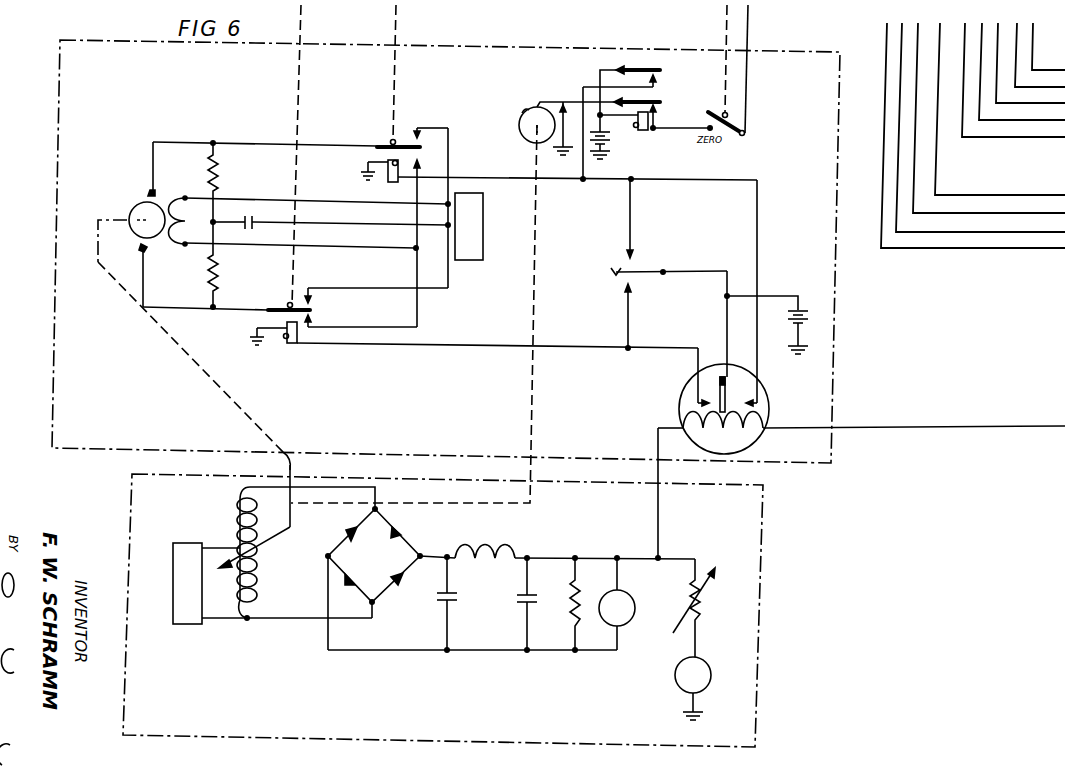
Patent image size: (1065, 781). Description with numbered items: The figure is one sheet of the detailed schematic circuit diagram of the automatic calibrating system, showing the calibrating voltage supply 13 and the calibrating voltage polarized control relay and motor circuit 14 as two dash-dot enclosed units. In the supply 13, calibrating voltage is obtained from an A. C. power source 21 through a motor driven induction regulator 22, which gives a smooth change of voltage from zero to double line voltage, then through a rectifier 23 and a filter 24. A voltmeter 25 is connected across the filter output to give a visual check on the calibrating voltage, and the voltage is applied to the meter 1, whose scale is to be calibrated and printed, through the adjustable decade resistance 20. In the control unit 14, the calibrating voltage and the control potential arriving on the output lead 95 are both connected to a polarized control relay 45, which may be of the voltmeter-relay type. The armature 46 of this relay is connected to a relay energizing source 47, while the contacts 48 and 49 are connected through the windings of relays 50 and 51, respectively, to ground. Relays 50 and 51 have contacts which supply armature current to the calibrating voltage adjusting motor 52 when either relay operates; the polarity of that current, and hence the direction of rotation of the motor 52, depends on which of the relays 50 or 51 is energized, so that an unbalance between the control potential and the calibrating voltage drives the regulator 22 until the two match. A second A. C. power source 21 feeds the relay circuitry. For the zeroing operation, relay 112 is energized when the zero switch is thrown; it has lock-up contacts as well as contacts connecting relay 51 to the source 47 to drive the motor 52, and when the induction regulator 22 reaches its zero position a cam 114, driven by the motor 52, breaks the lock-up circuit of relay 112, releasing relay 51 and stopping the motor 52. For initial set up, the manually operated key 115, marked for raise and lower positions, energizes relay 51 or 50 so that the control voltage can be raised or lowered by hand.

The meter 1 is at (711, 672).
The calibrating voltage supply 13 is at (757, 678).
The calibrating voltage polarized control relay and motor circuit 14 is at (52, 352).
The adjustable decade resistance 20 is at (702, 602).
The A. C. power source 21 is at (483, 206).
The motor driven induction regulator 22 is at (238, 539).
The rectifier 23 is at (406, 528).
The filter 24 is at (496, 548).
The voltmeter 25 is at (628, 604).
The polarized control relay 45 is at (754, 440).
The armature 46 is at (729, 381).
The relay energizing source 47 is at (614, 137).
The contact 48 is at (688, 392).
The contact 49 is at (760, 397).
The relay 50 is at (292, 344).
The relay 51 is at (392, 184).
The calibrating voltage adjusting motor 52 is at (135, 212).
The output lead 95 is at (986, 428).
The relay 112 is at (642, 134).
The cam 114 is at (521, 117).
The manually operated key 115 is at (639, 266).